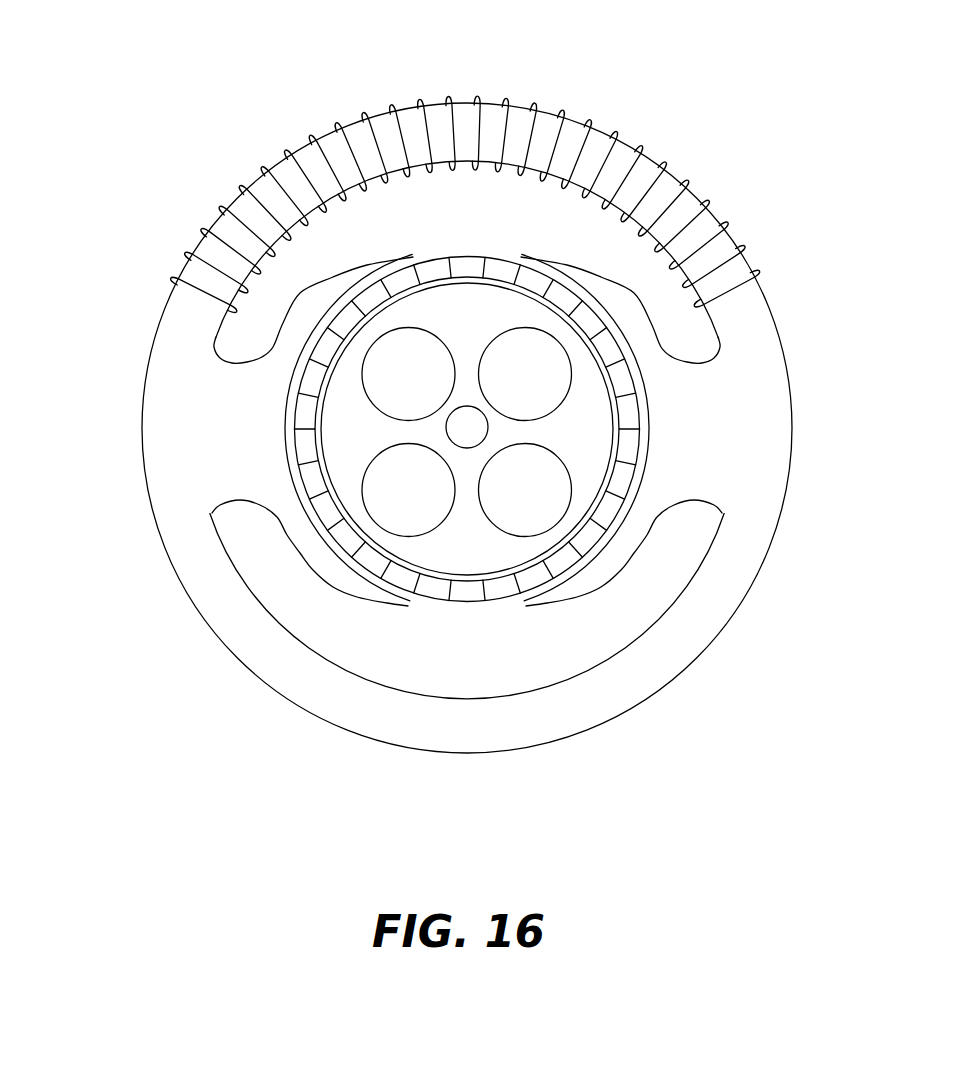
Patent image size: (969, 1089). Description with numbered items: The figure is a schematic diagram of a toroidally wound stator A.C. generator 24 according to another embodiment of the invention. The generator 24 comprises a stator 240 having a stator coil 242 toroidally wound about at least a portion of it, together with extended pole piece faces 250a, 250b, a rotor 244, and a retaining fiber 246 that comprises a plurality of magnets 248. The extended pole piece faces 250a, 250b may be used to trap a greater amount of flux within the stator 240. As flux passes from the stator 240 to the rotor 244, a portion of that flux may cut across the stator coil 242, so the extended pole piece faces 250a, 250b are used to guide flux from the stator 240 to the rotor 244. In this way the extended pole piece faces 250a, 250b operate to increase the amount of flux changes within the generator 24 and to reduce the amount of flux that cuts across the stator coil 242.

The A.C. generator 24 is at (512, 797).
The stator 240 is at (668, 679).
The stator coil 242 is at (421, 108).
The rotor 244 is at (600, 441).
The retaining fiber 246 is at (433, 587).
The magnets 248 is at (343, 542).
The extended pole piece face 250a is at (267, 451).
The extended pole piece face 250b is at (723, 451).